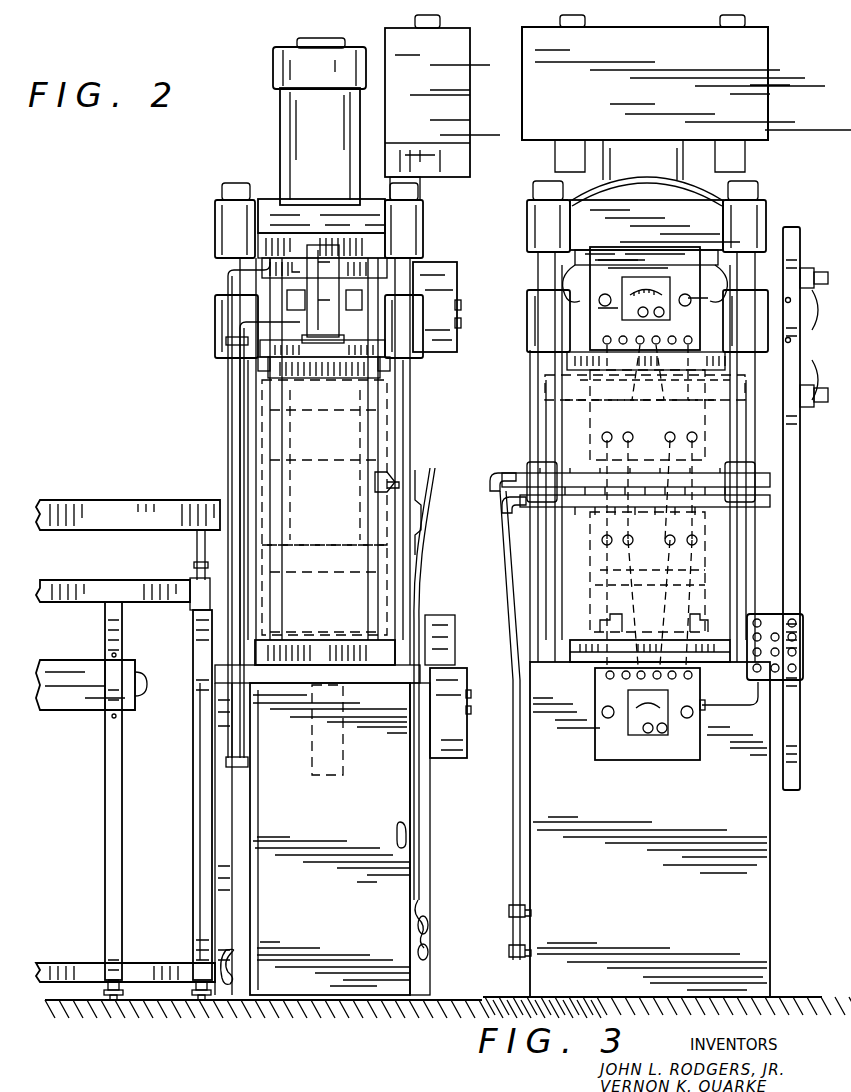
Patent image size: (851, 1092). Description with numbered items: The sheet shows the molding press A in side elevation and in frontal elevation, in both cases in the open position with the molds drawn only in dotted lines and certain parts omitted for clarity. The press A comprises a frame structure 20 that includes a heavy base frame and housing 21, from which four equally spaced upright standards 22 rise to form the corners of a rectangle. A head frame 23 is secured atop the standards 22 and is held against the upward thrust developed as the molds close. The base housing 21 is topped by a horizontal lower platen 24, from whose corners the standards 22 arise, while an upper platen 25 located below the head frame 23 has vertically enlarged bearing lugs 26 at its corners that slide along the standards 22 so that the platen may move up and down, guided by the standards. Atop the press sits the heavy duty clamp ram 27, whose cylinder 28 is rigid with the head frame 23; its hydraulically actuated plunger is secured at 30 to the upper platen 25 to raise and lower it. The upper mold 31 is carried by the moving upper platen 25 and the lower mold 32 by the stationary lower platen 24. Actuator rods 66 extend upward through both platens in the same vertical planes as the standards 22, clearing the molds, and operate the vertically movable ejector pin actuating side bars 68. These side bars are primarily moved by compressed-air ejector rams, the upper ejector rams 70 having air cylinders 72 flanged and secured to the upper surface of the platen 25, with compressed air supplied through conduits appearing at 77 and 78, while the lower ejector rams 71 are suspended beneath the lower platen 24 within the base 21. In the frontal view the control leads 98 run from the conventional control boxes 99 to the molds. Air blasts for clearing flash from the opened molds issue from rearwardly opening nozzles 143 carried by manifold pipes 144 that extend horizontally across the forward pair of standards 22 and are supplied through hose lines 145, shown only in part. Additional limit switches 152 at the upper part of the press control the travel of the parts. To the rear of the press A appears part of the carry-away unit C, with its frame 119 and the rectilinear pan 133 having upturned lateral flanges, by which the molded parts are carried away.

In FIG. 2, the frame structure 20 is at (434, 958).
In FIG. 3, the frame structure 20 is at (545, 968).
In FIG. 2, the base frame and housing 21 is at (362, 1005).
In FIG. 2, the standards 22 is at (240, 467).
In FIG. 3, the standards 22 is at (540, 432).
In FIG. 2, the head frame 23 is at (318, 200).
In FIG. 3, the head frame 23 is at (655, 232).
In FIG. 2, the lower platen 24 is at (400, 668).
In FIG. 2, the upper platen 25 is at (262, 363).
In FIG. 3, the upper platen 25 is at (578, 342).
In FIG. 2, the bearing lugs 26 is at (214, 346).
In FIG. 3, the bearing lugs 26 is at (527, 320).
In FIG. 2, the clamp ram 27 is at (276, 120).
In FIG. 3, the clamp ram 27 is at (642, 155).
In FIG. 2, the cylinder 28 is at (330, 124).
In FIG. 2, the plunger connection 30 is at (358, 296).
In FIG. 2, the upper mold 31 is at (262, 442).
In FIG. 3, the upper mold 31 is at (645, 415).
In FIG. 2, the lower mold 32 is at (402, 545).
In FIG. 3, the lower mold 32 is at (712, 545).
In FIG. 2, the actuator rods 66 is at (268, 402).
In FIG. 2, the upper side bars 68 is at (380, 380).
In FIG. 2, the upper ejector rams 70 is at (300, 280).
In FIG. 2, the lower ejector rams 71 is at (322, 780).
In FIG. 2, the air cylinders 72 is at (330, 258).
In FIG. 2, the conduit 77 is at (228, 266).
In FIG. 2, the conduit 78 is at (236, 334).
In FIG. 3, the control leads 98 is at (588, 402).
In FIG. 2, the control boxes 99 is at (455, 278).
In FIG. 3, the control boxes 99 is at (660, 752).
In FIG. 2, the frame 119 is at (118, 856).
In FIG. 2, the pan 133 is at (138, 510).
In FIG. 2, the nozzles 143 is at (382, 488).
In FIG. 3, the nozzles 143 is at (602, 493).
In FIG. 2, the manifold pipes 144 is at (422, 488).
In FIG. 3, the manifold pipes 144 is at (552, 482).
In FIG. 2, the hose lines 145 is at (420, 588).
In FIG. 3, the hose lines 145 is at (516, 828).
In FIG. 3, the limit switches 152 is at (809, 324).
In FIG. 2, the press A is at (212, 234).
In FIG. 2, the carry-away unit C is at (94, 500).